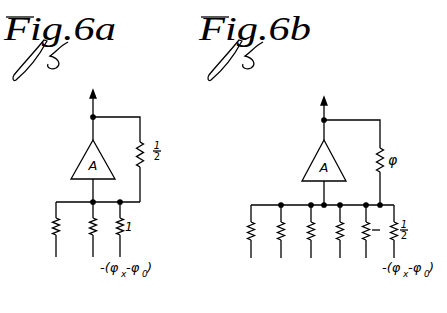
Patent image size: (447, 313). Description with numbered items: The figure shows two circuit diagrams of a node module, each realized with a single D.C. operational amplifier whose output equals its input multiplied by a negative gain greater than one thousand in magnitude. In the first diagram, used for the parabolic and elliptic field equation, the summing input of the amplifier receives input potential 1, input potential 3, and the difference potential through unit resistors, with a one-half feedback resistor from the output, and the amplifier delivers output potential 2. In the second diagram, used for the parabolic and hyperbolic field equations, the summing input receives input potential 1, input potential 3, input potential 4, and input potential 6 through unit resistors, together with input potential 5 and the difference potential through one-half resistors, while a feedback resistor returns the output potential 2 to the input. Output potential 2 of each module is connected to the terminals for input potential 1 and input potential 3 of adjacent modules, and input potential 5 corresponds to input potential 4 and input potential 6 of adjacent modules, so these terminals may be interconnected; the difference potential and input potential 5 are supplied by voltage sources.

In FIG. 6a, the input potential φ 1 is at (54, 240).
In FIG. 6b, the input potential φ 1 is at (250, 242).
In FIG. 6a, the output potential φ 2 is at (100, 91).
In FIG. 6b, the output potential φ 2 is at (331, 97).
In FIG. 6a, the input potential φ 3 is at (88, 240).
In FIG. 6b, the input potential φ 3 is at (280, 242).
In FIG. 6b, the input potential φ 4 is at (310, 242).
In FIG. 6b, the input potential φ 5 is at (367, 242).
In FIG. 6b, the input potential φ 6 is at (339, 242).